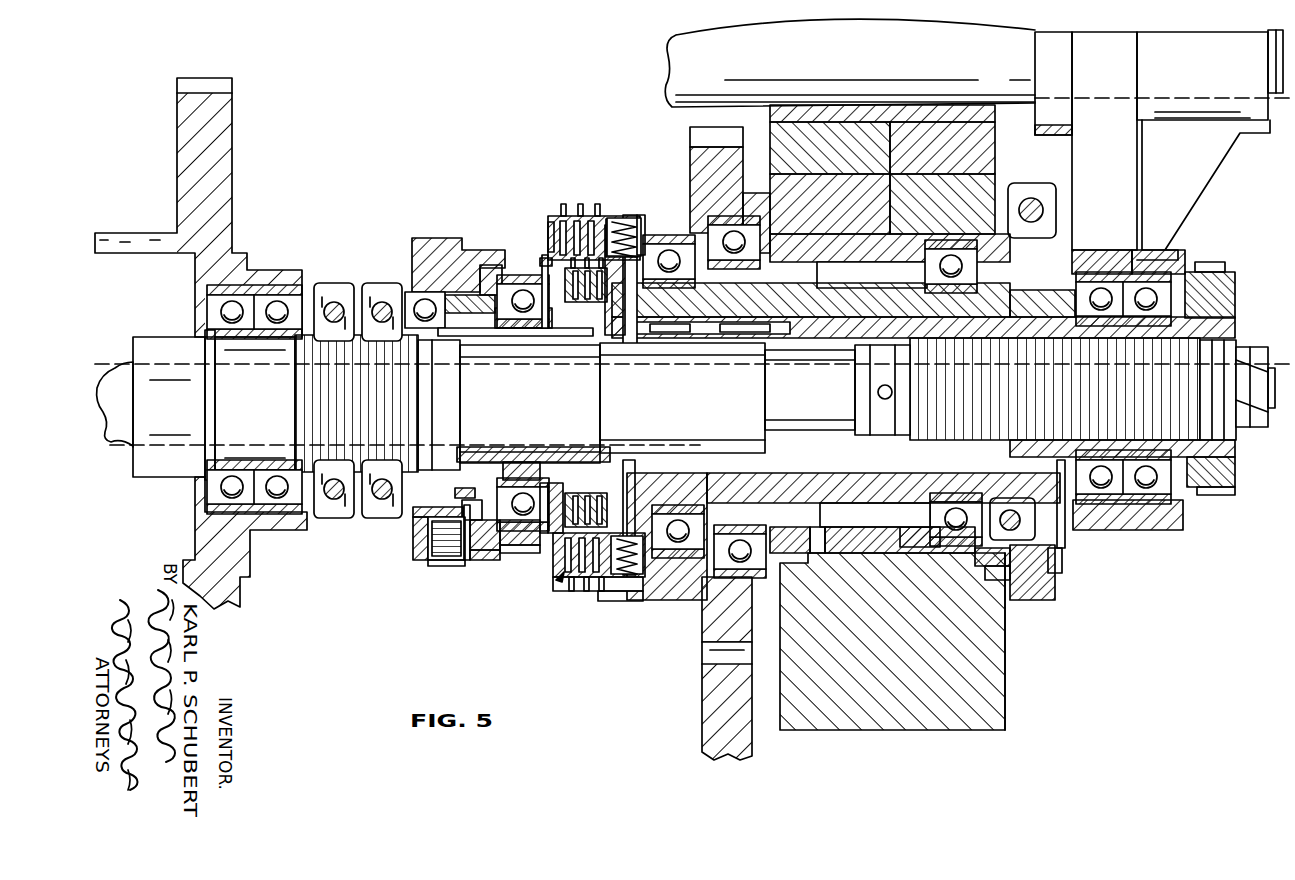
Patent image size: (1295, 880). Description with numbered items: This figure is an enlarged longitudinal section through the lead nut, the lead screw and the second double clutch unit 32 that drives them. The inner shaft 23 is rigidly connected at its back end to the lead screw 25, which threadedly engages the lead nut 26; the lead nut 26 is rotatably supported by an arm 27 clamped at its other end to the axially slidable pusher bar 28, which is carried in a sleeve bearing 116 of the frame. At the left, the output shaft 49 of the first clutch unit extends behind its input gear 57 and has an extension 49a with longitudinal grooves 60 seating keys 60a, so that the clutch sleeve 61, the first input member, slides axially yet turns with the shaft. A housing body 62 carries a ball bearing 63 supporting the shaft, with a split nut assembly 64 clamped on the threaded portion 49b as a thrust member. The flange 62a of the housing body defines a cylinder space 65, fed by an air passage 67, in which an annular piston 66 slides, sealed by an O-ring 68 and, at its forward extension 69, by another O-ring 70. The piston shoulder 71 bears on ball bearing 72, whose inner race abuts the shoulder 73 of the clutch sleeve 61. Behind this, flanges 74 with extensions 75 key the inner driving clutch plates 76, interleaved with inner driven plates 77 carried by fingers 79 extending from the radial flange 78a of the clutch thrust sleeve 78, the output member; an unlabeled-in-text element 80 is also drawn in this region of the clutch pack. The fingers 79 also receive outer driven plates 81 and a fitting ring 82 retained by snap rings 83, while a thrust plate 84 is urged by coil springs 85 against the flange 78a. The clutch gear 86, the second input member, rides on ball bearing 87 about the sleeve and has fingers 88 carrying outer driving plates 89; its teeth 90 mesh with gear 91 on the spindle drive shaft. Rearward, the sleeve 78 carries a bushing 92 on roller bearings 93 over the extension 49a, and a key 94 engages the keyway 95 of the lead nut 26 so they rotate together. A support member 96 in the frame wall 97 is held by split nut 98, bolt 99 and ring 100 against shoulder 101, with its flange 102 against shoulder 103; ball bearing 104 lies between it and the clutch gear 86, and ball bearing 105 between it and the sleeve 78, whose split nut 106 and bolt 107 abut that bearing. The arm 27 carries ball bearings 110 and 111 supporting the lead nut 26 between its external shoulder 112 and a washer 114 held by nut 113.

The inner shaft 23 is at (125, 378).
The lead screw 25 is at (1234, 336).
The lead nut 26 is at (850, 354).
The arm 27 is at (1177, 202).
The pusher bar 28 is at (805, 73).
The second double clutch unit 32 is at (565, 594).
The output shaft 49 is at (168, 334).
The extension 49a is at (682, 414).
The threaded portion 49b is at (390, 288).
The input gear 57 is at (230, 134).
The longitudinal grooves 60 is at (498, 346).
The keys 60a is at (527, 358).
The clutch sleeve 61 is at (538, 344).
The housing body 62 is at (425, 541).
The annular flange 62a is at (492, 560).
The ball bearing 63 is at (400, 520).
The split nut assembly 64 is at (372, 520).
The annular cylinder space 65 is at (484, 560).
The annular piston 66 is at (536, 574).
The air inlet and exhaust passage 67 is at (430, 578).
The O-ring 68 is at (504, 562).
The piston extension 69 is at (470, 490).
The O-ring 70 is at (466, 502).
The annular shoulder 71 is at (508, 525).
The ball bearing 72 is at (554, 541).
The annular shoulder 73 is at (528, 450).
The flanges 74 is at (554, 580).
The extensions 75 is at (608, 350).
The driving clutch plates 76 is at (574, 340).
The driven clutch plates 77 is at (560, 350).
The clutch thrust sleeve 78 is at (823, 298).
The radial flange 78a is at (694, 240).
The fingers 79 is at (622, 220).
The ring 80 is at (550, 259).
The driven clutch plates 81 is at (576, 212).
The fitting ring 82 is at (560, 208).
The snap rings 83 is at (554, 226).
The thrust plate 84 is at (616, 326).
The coil springs 85 is at (638, 216).
The clutch gear 86 is at (680, 604).
The ball bearing 87 is at (690, 586).
The fingers 88 is at (620, 604).
The driving clutch plates 89 is at (572, 604).
The gear teeth 90 is at (704, 662).
The gear 91 is at (704, 692).
The bushing 92 is at (688, 336).
The roller bearings 93 is at (660, 336).
The key 94 is at (924, 508).
The keyway 95 is at (900, 529).
The support member 96 is at (872, 556).
The frame wall 97 is at (990, 664).
The split nut 98 is at (1054, 586).
The bolt 99 is at (1033, 200).
The ring 100 is at (984, 566).
The internal annular shoulder 101 is at (952, 548).
The annular radial flange 102 is at (784, 564).
The internal annular shoulder 103 is at (834, 552).
The ball bearing 104 is at (875, 515).
The ball bearing 105 is at (928, 538).
The split nut 106 is at (1062, 560).
The bolt 107 is at (1019, 502).
The ball bearing 110 is at (1088, 270).
The ball bearing 111 is at (1140, 274).
The external shoulder 112 is at (1063, 538).
The nut 113 is at (1234, 478).
The washer 114 is at (1188, 272).
The sleeve bearing 116 is at (889, 94).